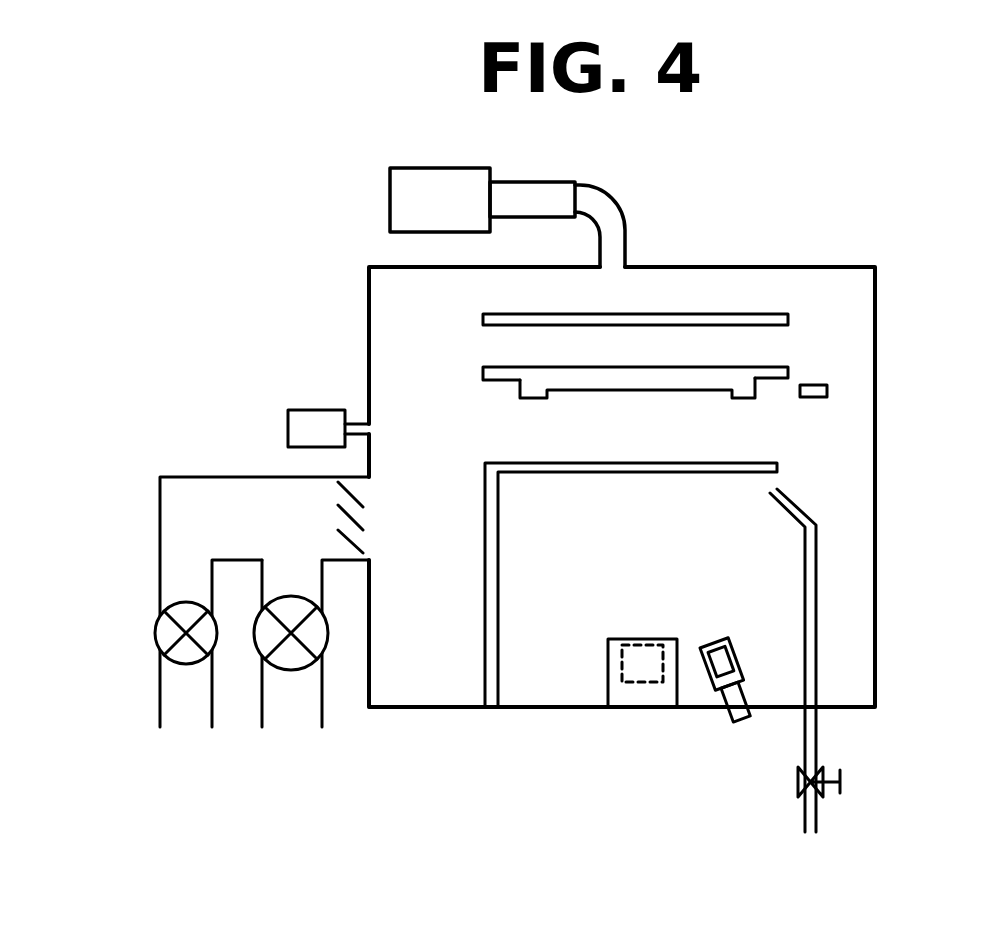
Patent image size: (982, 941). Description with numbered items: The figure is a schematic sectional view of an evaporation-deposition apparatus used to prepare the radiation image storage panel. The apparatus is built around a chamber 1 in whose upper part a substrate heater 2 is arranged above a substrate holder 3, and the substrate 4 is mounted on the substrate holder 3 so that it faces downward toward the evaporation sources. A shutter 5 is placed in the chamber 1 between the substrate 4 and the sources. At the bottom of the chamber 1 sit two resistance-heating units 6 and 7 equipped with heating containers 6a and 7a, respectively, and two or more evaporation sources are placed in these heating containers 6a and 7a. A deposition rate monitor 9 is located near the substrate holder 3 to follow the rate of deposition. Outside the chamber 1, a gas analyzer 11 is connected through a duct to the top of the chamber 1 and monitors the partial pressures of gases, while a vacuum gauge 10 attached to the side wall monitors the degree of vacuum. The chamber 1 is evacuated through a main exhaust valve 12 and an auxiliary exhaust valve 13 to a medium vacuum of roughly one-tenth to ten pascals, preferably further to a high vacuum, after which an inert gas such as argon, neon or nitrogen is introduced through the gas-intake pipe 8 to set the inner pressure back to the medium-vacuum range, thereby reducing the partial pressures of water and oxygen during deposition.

The chamber 1 is at (655, 266).
The substrate heater 2 is at (673, 317).
The substrate holder 3 is at (688, 367).
The substrate 4 is at (712, 388).
The shutter 5 is at (485, 597).
The resistance-heating unit 6 is at (633, 695).
The heating container 6a is at (642, 639).
The resistance-heating unit 7 is at (703, 690).
The heating container 7a is at (720, 645).
The gas-intake pipe 8 is at (816, 735).
The deposition rate monitor 9 is at (813, 384).
The vacuum gauge 10 is at (313, 409).
The gas analyzer 11 is at (530, 180).
The main exhaust valve 12 is at (254, 633).
The auxiliary exhaust valve 13 is at (156, 633).